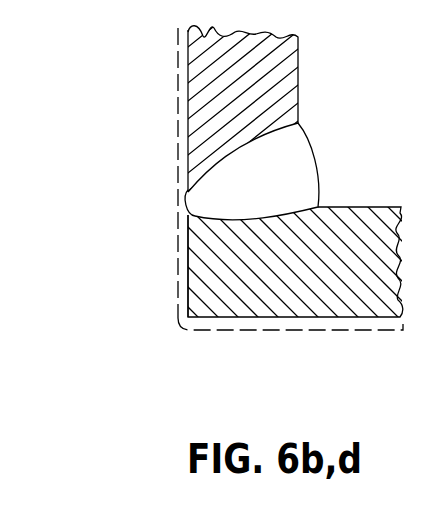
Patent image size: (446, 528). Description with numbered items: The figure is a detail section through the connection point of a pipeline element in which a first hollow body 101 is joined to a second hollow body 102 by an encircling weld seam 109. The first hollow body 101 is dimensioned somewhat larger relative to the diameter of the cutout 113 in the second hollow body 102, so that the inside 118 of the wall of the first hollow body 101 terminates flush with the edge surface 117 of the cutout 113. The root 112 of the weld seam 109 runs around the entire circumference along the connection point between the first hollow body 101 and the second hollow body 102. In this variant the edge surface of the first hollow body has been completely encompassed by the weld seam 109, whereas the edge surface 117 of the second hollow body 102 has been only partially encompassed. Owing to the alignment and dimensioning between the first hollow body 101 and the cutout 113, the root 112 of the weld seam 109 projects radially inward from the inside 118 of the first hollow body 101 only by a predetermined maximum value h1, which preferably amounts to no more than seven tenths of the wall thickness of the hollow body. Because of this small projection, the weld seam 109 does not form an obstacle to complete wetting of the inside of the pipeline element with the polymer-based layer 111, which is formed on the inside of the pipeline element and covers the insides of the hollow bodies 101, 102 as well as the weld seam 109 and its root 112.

The first hollow body 101 is at (205, 60).
The second hollow body 102 is at (357, 222).
The weld seam 109 is at (325, 152).
The polymer-based layer 111 is at (177, 133).
The root of the weld seam 112 is at (178, 188).
The cutout 113 is at (162, 314).
The edge surface of the second hollow body 117 is at (189, 278).
The inside of the first hollow body 118 is at (180, 107).
The predetermined maximum value h1 is at (212, 215).